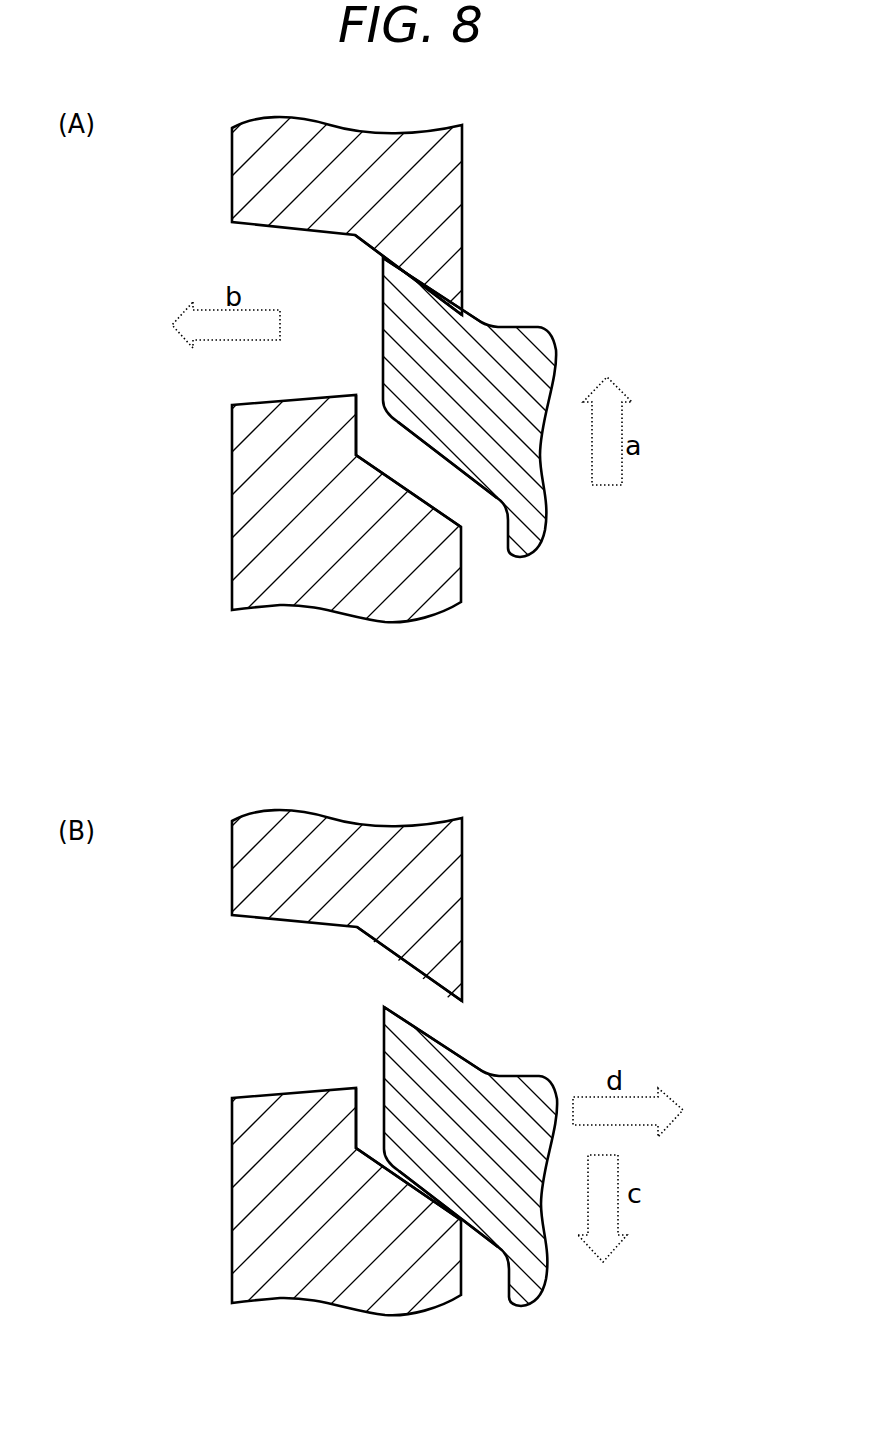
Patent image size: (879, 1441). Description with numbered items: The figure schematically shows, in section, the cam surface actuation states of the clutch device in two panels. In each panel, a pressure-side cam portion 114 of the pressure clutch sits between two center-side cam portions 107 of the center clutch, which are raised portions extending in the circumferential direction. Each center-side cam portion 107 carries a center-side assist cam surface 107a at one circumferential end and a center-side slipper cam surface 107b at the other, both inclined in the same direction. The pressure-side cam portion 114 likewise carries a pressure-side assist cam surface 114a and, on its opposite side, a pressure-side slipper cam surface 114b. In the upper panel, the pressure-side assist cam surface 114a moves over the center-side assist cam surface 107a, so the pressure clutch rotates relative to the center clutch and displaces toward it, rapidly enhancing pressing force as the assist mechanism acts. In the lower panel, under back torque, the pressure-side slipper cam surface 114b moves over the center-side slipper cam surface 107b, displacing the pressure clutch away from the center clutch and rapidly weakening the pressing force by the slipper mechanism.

The center-side cam portion 107 is at (462, 172).
The center-side assist cam surface 107a is at (372, 250).
The center-side slipper cam surface 107b is at (383, 468).
The pressure-side cam portion 114 is at (383, 317).
The pressure-side assist cam surface 114a is at (468, 312).
The pressure-side slipper cam surface 114b is at (494, 496).